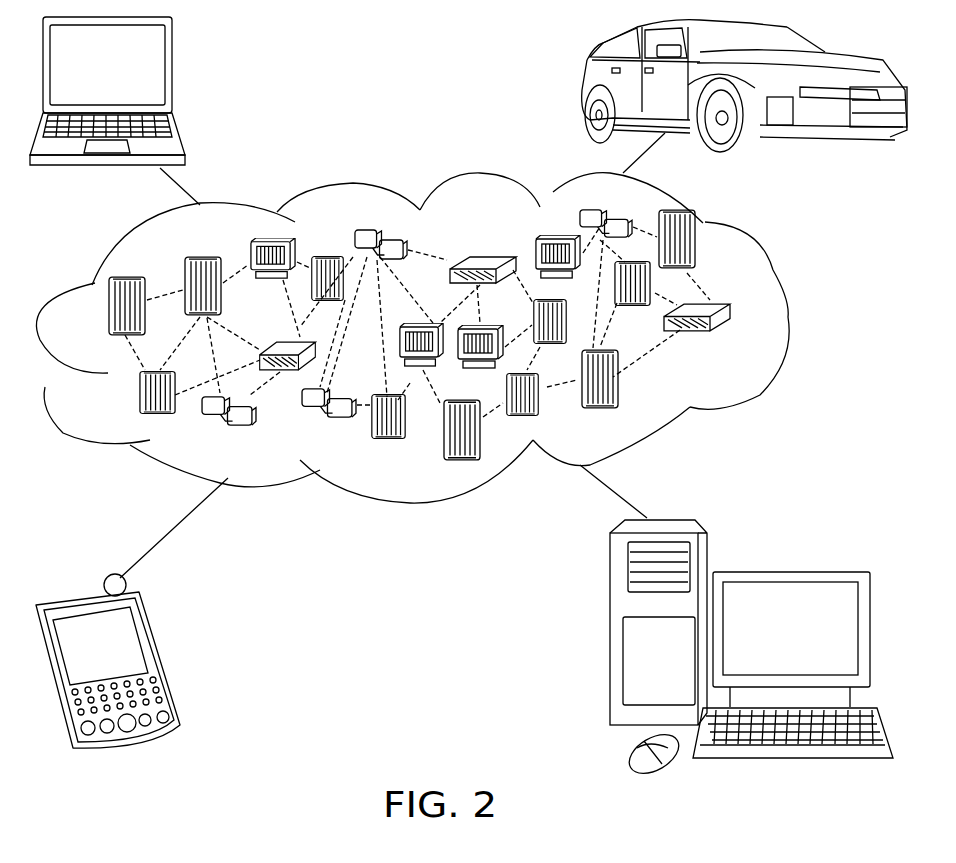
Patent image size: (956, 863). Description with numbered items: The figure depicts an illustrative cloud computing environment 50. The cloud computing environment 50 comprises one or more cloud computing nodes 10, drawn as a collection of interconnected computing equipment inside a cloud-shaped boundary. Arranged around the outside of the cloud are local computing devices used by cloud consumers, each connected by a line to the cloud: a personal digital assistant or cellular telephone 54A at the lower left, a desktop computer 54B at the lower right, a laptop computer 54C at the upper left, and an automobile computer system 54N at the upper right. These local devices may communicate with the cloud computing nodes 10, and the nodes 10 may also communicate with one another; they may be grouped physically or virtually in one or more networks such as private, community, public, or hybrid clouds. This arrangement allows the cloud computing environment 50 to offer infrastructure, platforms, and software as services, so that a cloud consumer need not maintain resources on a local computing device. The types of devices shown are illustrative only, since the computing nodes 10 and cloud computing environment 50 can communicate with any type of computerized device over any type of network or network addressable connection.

The cloud computing nodes 10 is at (735, 342).
The cloud computing environment 50 is at (790, 318).
The personal digital assistant or cellular telephone 54A is at (162, 654).
The desktop computer 54B is at (790, 572).
The laptop computer 54C is at (172, 72).
The automobile computer system 54N is at (580, 88).